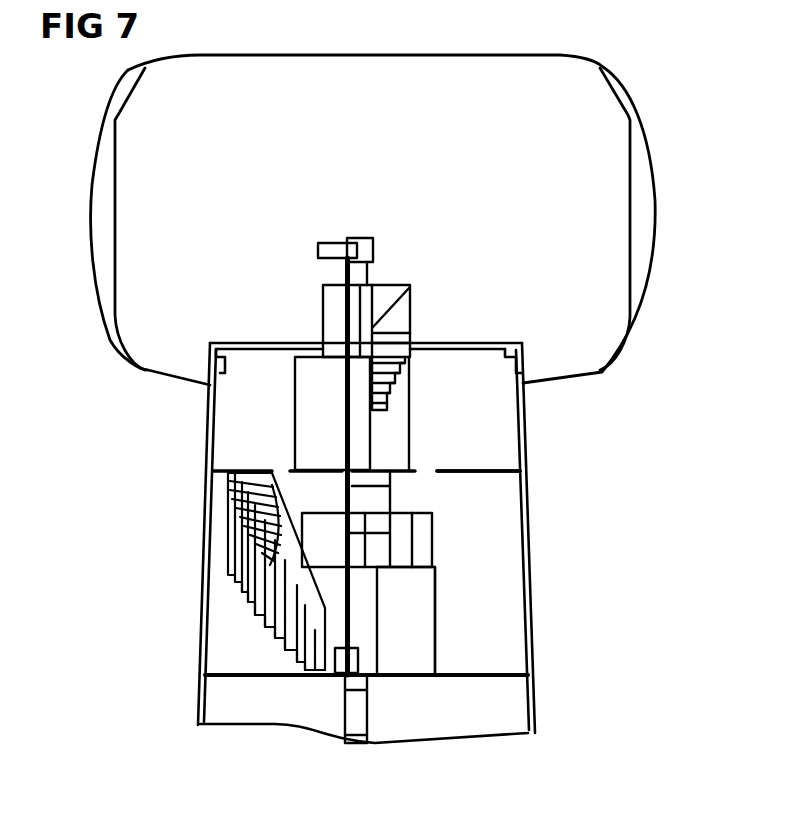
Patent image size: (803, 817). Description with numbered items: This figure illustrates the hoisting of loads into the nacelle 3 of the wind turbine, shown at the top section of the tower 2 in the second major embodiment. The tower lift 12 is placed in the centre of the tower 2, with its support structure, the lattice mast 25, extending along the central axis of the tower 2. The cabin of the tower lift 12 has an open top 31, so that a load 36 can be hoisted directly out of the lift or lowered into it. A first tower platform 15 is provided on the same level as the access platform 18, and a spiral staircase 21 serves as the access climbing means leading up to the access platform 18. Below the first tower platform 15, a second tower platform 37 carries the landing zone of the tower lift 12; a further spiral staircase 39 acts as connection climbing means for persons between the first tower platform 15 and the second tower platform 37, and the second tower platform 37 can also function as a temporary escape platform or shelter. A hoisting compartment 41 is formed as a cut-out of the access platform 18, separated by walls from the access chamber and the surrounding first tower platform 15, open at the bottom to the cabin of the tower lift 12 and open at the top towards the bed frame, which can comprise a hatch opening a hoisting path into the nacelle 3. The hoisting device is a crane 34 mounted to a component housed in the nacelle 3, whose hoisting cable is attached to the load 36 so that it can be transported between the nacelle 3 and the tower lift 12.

The tower 2 is at (203, 522).
The nacelle 3 is at (656, 220).
The tower lift 12 is at (415, 605).
The first tower platform 15 is at (493, 471).
The access platform 18 is at (397, 470).
The spiral staircase 21 is at (390, 393).
The lattice mast 25 is at (393, 715).
The open top 31 is at (437, 647).
The crane 34 is at (325, 243).
The load 36 is at (300, 668).
The second tower platform 37 is at (352, 503).
The spiral staircase 39 is at (240, 598).
The hoisting compartment 41 is at (315, 415).